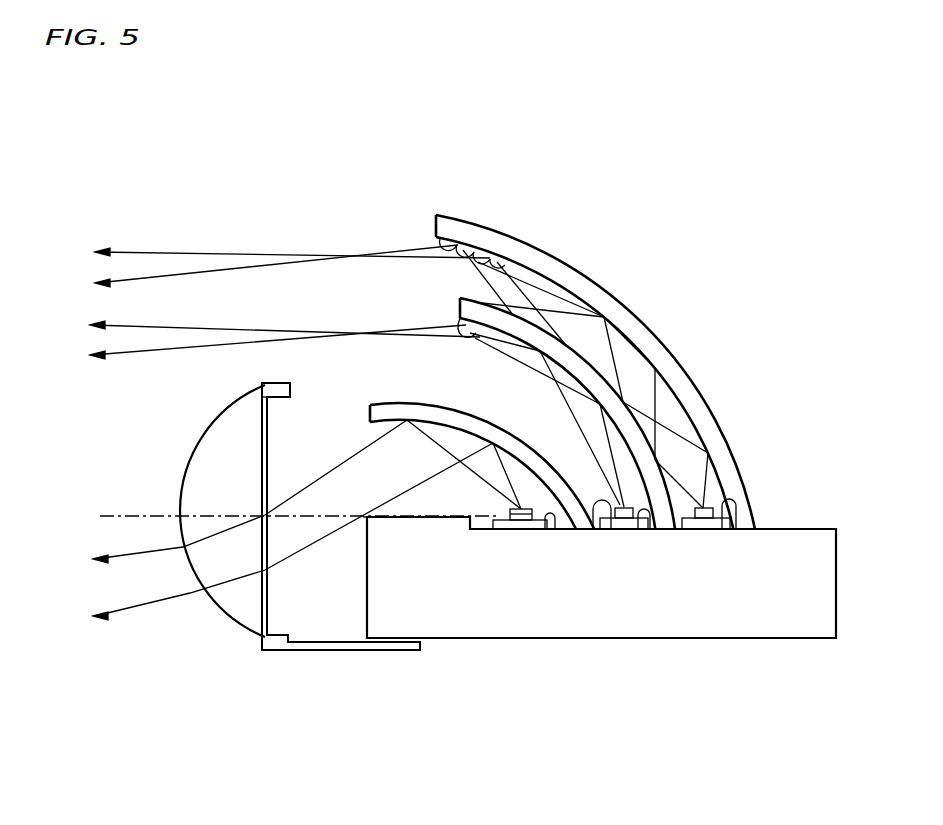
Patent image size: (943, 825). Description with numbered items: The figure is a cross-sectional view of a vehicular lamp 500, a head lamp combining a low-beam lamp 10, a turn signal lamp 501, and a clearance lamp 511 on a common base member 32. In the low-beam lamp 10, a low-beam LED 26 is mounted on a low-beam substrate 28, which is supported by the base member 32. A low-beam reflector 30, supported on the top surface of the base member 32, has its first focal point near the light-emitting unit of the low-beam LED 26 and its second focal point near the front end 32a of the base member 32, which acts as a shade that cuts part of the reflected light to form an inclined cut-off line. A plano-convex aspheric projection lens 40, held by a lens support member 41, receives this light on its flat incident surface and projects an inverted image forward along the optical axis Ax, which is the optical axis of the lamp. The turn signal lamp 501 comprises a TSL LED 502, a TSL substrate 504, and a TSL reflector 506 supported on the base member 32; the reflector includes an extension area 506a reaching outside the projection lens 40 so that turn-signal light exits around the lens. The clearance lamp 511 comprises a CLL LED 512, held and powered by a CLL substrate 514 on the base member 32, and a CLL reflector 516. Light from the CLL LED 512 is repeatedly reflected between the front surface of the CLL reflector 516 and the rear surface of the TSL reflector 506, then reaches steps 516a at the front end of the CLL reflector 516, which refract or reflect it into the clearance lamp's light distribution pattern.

The vehicular lamp 500 is at (318, 134).
The optical axis Ax is at (112, 515).
The low-beam lamp 10 is at (200, 420).
The projection lens 40 is at (196, 452).
The lens support member 41 is at (333, 652).
The base member 32 is at (832, 528).
The front end of the base member 32a is at (363, 515).
The low-beam reflector 30 is at (372, 424).
The low-beam LED 26 is at (510, 515).
The low-beam substrate 28 is at (552, 530).
The TSL LED 502 is at (597, 530).
The TSL substrate 504 is at (652, 530).
The CLL LED 512 is at (710, 507).
The CLL substrate 514 is at (735, 505).
The turn signal lamp 501 is at (468, 374).
The TSL reflector 506 is at (612, 383).
The extension area 506a is at (513, 352).
The clearance lamp 511 is at (415, 232).
The CLL reflector 516 is at (592, 283).
The steps 516a is at (437, 238).